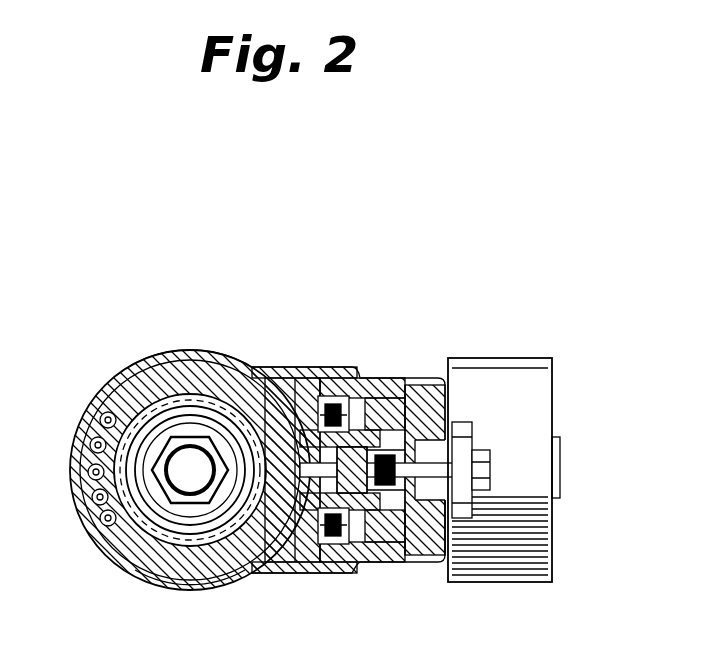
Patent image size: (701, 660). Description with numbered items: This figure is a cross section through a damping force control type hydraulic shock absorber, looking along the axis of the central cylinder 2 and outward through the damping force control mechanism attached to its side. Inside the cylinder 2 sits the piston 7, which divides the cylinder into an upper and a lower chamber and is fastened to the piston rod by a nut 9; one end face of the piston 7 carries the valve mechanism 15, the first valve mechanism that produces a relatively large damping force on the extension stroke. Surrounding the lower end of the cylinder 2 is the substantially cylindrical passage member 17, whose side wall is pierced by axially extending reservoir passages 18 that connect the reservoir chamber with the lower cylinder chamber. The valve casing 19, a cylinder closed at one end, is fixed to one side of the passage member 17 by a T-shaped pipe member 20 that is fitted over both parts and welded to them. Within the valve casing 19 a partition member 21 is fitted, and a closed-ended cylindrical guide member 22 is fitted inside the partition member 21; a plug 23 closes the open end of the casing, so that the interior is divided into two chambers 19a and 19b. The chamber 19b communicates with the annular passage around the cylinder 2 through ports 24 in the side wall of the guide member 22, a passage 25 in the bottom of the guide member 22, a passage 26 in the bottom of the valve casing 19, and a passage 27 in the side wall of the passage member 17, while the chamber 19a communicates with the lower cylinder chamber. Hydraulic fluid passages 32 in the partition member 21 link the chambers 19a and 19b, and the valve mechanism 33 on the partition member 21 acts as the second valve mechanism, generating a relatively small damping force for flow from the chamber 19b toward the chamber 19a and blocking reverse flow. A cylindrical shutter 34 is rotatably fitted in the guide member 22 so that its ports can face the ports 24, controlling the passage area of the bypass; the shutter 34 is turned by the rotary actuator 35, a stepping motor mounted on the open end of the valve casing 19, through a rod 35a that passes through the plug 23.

The central cylinder 2 is at (118, 558).
The piston 7 is at (214, 410).
The nut 9 is at (168, 440).
The valve mechanism 15 is at (152, 583).
The passage member 17 is at (185, 350).
The reservoir passages 18 is at (102, 414).
The valve casing 19 is at (405, 378).
The chamber 19a is at (310, 370).
The chamber 19b is at (415, 378).
The T-shaped pipe member 20 is at (115, 383).
The partition member 21 is at (366, 566).
The guide member 22 is at (302, 556).
The plug 23 is at (458, 518).
The ports 24 is at (440, 562).
The passage 25 is at (287, 573).
The passage 26 is at (253, 574).
The passage 27 is at (196, 568).
The hydraulic fluid passages 32 is at (370, 378).
The valve mechanism 33 is at (334, 378).
The cylindrical shutter 34 is at (561, 495).
The rotary actuator 35 is at (553, 413).
The rod 35a is at (456, 442).